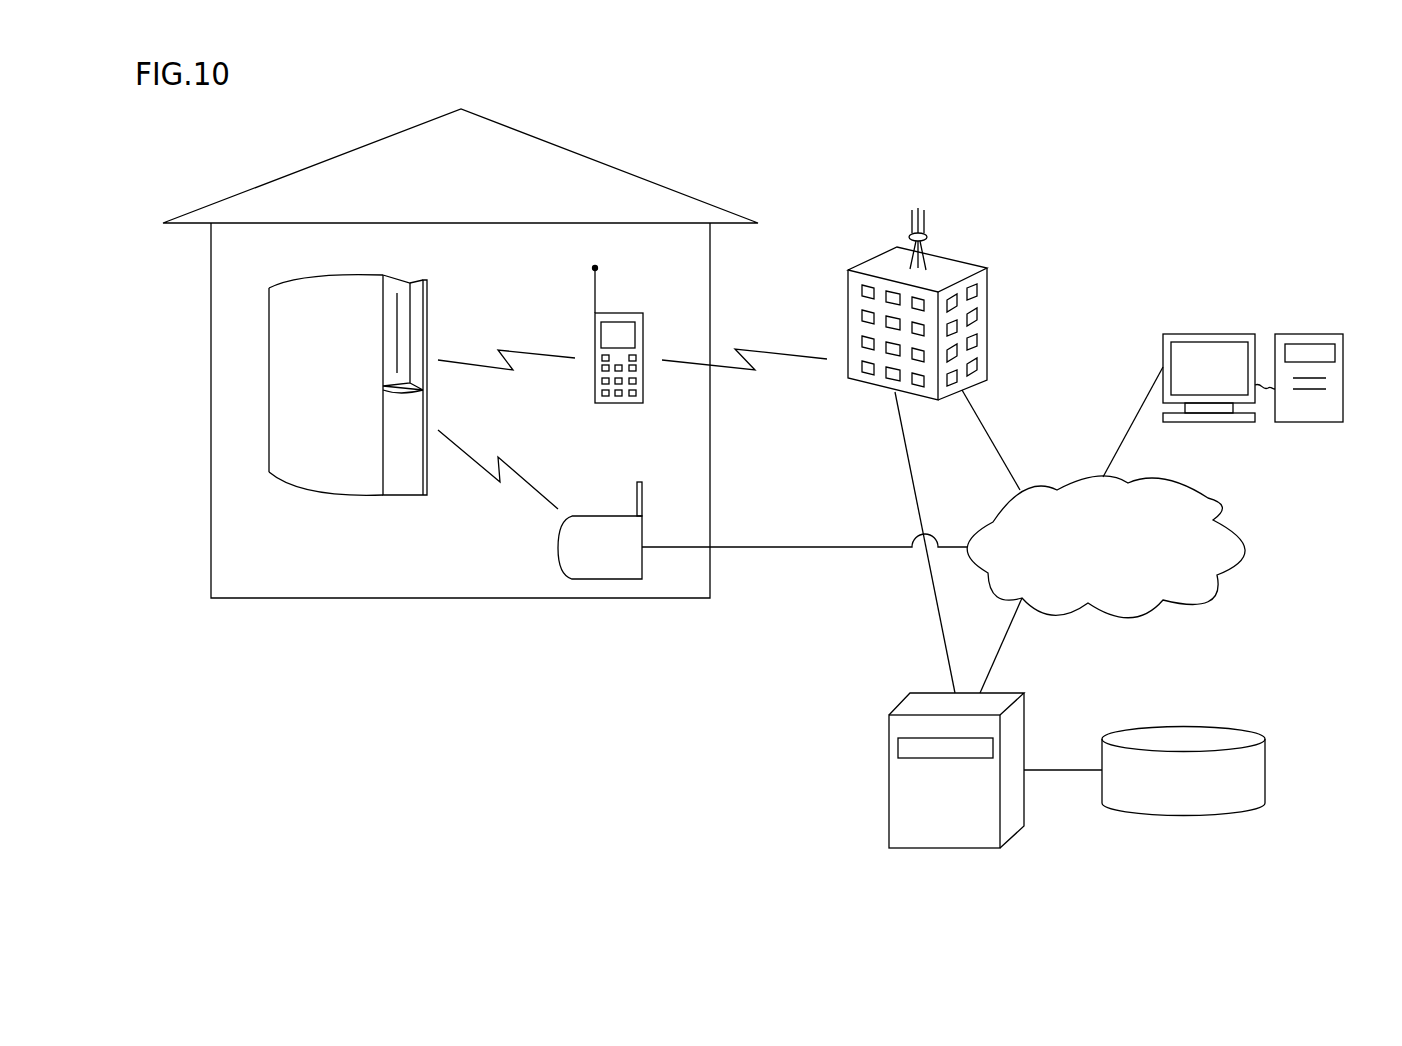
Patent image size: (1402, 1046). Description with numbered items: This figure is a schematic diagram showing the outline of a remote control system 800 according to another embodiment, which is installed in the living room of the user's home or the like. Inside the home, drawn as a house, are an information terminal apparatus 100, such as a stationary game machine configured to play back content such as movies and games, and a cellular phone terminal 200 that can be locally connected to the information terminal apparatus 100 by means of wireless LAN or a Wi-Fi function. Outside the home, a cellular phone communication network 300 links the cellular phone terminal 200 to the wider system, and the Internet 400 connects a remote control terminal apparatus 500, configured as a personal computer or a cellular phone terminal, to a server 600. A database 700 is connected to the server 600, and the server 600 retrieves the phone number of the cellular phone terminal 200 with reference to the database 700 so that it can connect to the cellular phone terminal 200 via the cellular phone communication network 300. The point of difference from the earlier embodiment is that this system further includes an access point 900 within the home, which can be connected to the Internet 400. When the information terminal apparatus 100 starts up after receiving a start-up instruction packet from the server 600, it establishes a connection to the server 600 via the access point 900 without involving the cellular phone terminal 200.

The information terminal apparatus 100 is at (335, 497).
The cellular phone terminal 200 is at (620, 313).
The cellular phone communication network 300 is at (957, 259).
The Internet 400 is at (1212, 494).
The remote control terminal apparatus 500 is at (1208, 334).
The server 600 is at (889, 830).
The database 700 is at (1184, 727).
The remote control system 800 is at (770, 873).
The access point 900 is at (605, 516).